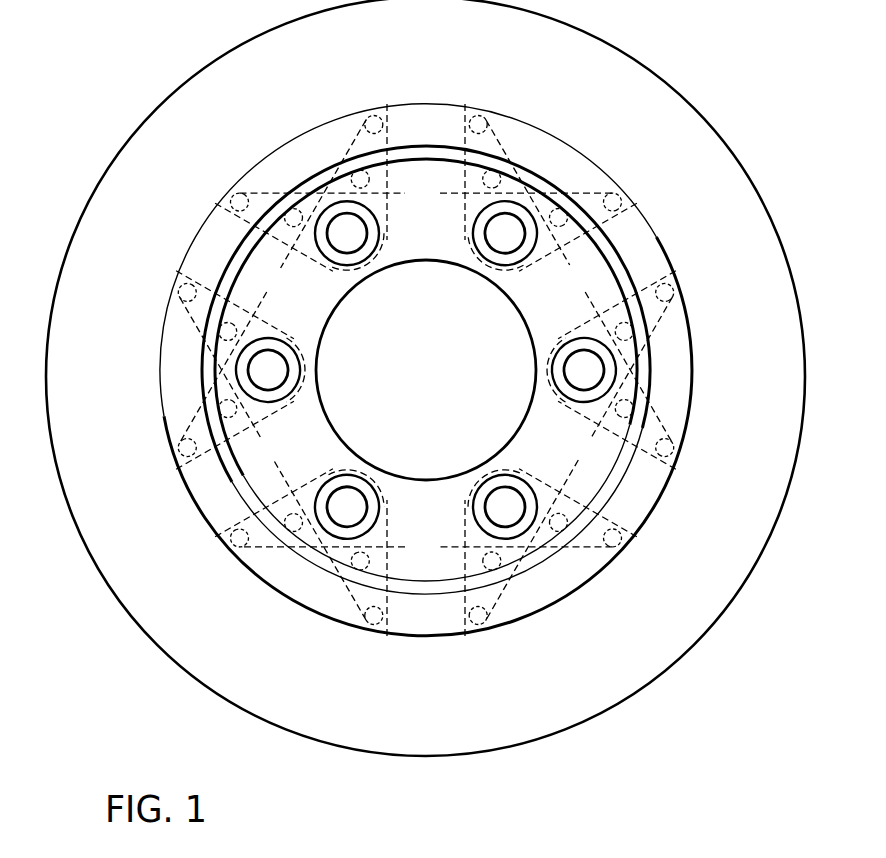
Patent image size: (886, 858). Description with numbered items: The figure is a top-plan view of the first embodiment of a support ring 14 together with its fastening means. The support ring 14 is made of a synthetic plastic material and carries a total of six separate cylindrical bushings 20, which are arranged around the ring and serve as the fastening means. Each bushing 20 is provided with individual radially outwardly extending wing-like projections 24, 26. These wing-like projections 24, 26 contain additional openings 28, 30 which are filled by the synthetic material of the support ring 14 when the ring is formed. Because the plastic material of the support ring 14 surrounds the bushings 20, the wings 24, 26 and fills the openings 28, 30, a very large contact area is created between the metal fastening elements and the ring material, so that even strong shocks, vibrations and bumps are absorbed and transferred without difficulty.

The support ring 14 is at (667, 90).
The cylindrical bushing 20 is at (347, 265).
The wing-like projection 24 is at (498, 118).
The wing-like projection 26 is at (358, 112).
The opening 28 is at (582, 441).
The opening 30 is at (472, 117).